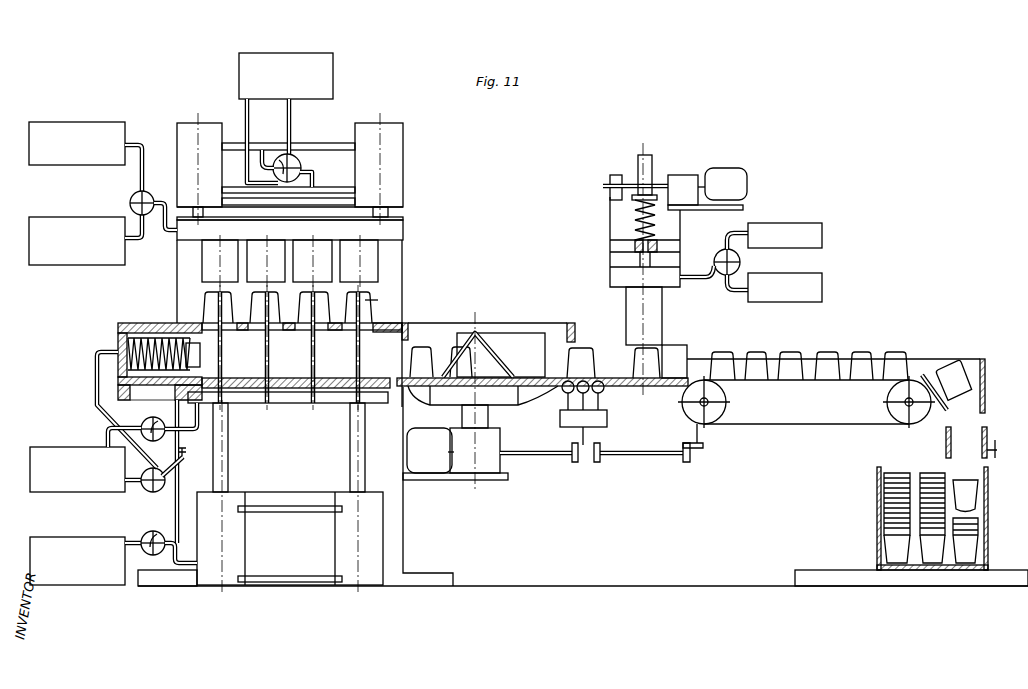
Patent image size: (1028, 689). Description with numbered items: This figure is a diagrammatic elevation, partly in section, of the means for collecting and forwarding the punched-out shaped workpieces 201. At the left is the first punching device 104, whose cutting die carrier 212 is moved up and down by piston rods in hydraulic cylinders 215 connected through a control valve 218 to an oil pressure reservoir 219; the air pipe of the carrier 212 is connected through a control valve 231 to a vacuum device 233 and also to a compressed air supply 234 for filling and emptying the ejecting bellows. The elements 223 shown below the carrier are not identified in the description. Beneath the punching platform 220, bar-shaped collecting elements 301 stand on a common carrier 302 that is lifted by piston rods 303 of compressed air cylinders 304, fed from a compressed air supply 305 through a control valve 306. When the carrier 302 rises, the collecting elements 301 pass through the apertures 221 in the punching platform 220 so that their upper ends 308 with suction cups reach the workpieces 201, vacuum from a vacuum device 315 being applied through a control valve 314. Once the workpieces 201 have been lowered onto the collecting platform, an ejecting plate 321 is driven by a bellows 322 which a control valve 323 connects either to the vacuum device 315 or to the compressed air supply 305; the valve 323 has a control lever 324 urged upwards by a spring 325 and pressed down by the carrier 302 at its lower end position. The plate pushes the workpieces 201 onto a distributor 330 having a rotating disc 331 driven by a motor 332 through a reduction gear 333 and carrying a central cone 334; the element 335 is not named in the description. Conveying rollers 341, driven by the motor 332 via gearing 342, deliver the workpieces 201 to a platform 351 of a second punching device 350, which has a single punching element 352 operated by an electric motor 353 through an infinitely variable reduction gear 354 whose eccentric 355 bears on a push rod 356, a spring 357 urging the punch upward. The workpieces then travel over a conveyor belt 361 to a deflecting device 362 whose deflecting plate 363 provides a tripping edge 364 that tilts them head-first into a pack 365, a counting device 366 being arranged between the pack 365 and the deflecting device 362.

The first punching device 104 is at (161, 293).
The shaped workpieces 201 is at (210, 313).
The cutting die carrier 212 is at (403, 230).
The hydraulic cylinders 215 is at (177, 136).
The control valve 218 is at (292, 159).
The oil pressure reservoir 219 is at (283, 58).
The punching platform 220 is at (389, 338).
The apertures 221 is at (335, 331).
The press block 223 is at (368, 262).
The control valve 231 is at (131, 198).
The vacuum device 233 is at (68, 124).
The compressed air supply 234 is at (78, 264).
The collecting elements 301 is at (224, 364).
The carrier 302 is at (290, 406).
The piston rods 303 is at (228, 448).
The compressed air cylinders 304 is at (243, 543).
The compressed air supply 305 is at (77, 540).
The control valve 306 is at (147, 553).
The upper ends 308 is at (382, 295).
The control valve 314 is at (160, 415).
The vacuum device 315 is at (72, 449).
The ejecting plate 321 is at (186, 356).
The bellows 322 is at (170, 332).
The control valve 323 is at (146, 486).
The control lever 324 is at (181, 476).
The spring 325 is at (185, 456).
The distributor 330 is at (486, 313).
The rotating disc 331 is at (459, 387).
The motor 332 is at (427, 478).
The reduction gear 333 is at (478, 480).
The cone 334 is at (466, 333).
The hopper 335 is at (532, 334).
The conveying rollers 341 is at (603, 393).
The gearing 342 is at (560, 421).
The second punching device 350 is at (696, 254).
The platform 351 is at (660, 394).
The punching element 352 is at (626, 310).
The electric motor 353 is at (730, 175).
The reduction gear 354 is at (688, 176).
The eccentric 355 is at (652, 157).
The push rod 356 is at (636, 250).
The spring 357 is at (648, 220).
The conveyor belt 361 is at (770, 424).
The deflecting device 362 is at (985, 382).
The deflecting plate 363 is at (950, 406).
The tripping edge 364 is at (934, 369).
The pack 365 is at (877, 497).
The counting device 366 is at (992, 436).